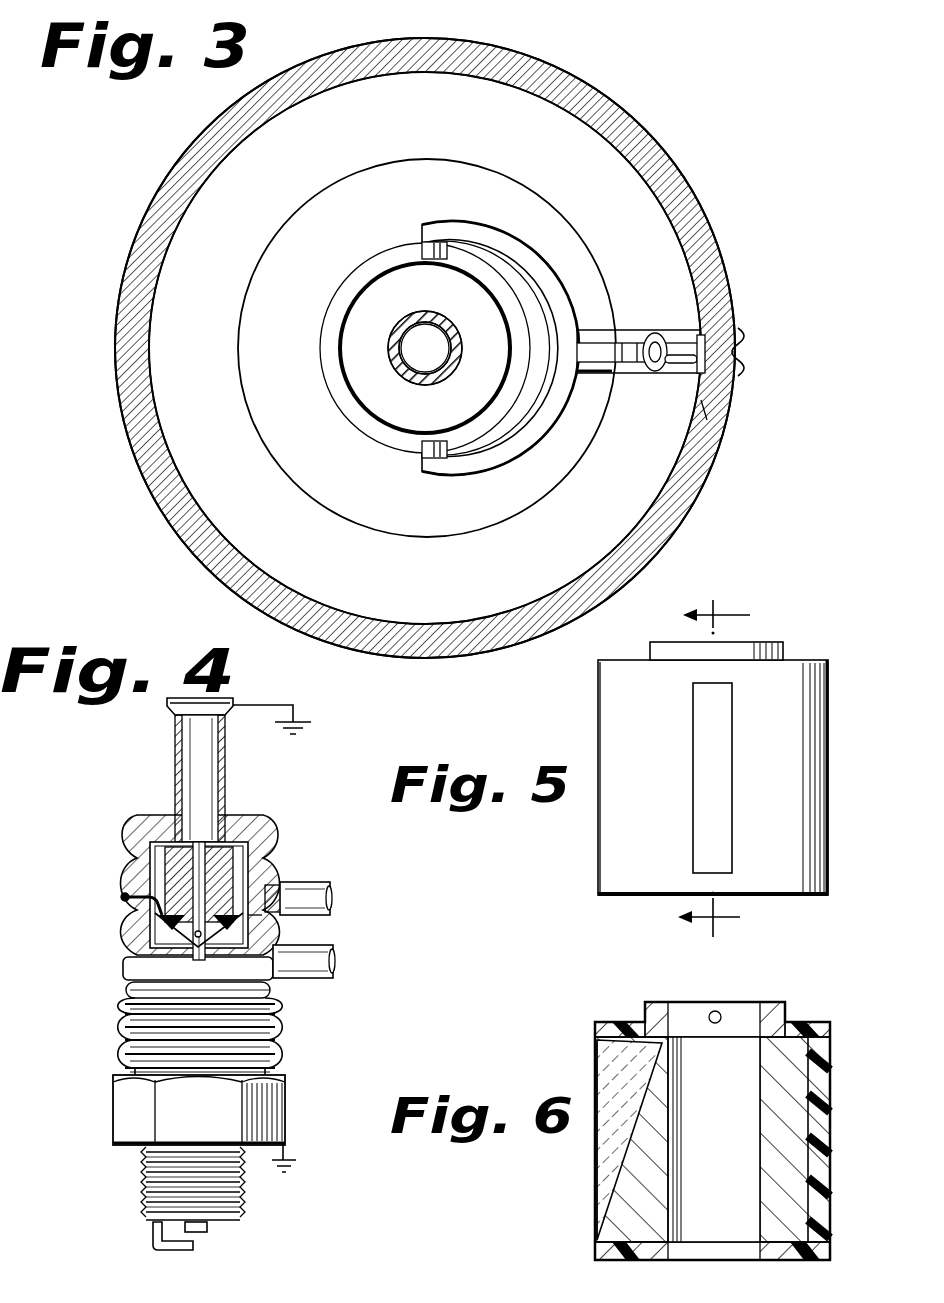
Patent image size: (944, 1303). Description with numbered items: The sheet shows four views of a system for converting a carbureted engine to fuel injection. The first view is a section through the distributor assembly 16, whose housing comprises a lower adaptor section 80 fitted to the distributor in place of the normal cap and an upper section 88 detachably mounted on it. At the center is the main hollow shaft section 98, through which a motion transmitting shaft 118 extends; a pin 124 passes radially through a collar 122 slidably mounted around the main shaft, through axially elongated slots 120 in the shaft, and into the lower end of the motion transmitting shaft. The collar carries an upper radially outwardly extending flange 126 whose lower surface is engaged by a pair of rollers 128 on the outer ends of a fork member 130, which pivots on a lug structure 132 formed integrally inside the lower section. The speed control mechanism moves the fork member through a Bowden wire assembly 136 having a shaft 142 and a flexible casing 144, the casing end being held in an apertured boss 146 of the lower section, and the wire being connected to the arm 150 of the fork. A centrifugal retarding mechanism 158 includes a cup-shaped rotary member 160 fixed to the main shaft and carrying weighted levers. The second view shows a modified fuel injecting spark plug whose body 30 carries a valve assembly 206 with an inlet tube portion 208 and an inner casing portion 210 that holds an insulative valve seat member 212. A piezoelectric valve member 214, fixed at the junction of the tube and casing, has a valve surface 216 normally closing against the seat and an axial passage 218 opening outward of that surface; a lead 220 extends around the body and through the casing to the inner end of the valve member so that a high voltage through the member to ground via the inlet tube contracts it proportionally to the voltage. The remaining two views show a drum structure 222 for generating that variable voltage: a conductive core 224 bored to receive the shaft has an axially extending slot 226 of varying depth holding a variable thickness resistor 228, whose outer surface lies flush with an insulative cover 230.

In FIG. 3, the distributor assembly 16 is at (690, 70).
In FIG. 3, the lower adaptor section 80 is at (330, 630).
In FIG. 3, the upper section 88 is at (560, 566).
In FIG. 3, the main hollow shaft section 98 is at (420, 338).
In FIG. 3, the motion transmitting shaft 118 is at (405, 332).
In FIG. 3, the axially elongated slots 120 is at (457, 348).
In FIG. 3, the collar 122 is at (388, 420).
In FIG. 3, the pin 124 is at (395, 357).
In FIG. 3, the upper radially outwardly extending flange 126 is at (328, 378).
In FIG. 3, the rollers 128 is at (422, 249).
In FIG. 3, the fork member 130 is at (542, 355).
In FIG. 3, the lug structure 132 is at (597, 330).
In FIG. 3, the Bowden wire assembly 136 is at (712, 420).
In FIG. 3, the shaft 142 is at (686, 316).
In FIG. 3, the flexible casing 144 is at (706, 340).
In FIG. 3, the apertured boss 146 is at (744, 372).
In FIG. 3, the arm 150 is at (612, 378).
In FIG. 3, the centrifugal retarding mechanism 158 is at (582, 238).
In FIG. 3, the rotary member 160 is at (262, 362).
In FIG. 4, the body 30 is at (122, 838).
In FIG. 4, the valve assembly 206 is at (274, 848).
In FIG. 4, the inlet tube portion 208 is at (226, 772).
In FIG. 4, the inner casing portion 210 is at (282, 883).
In FIG. 4, the valve seat member 212 is at (152, 940).
In FIG. 4, the valve member 214 is at (160, 870).
In FIG. 4, the valve surface 216 is at (135, 972).
In FIG. 4, the axial passage 218 is at (250, 922).
In FIG. 4, the lead 220 is at (122, 900).
In FIG. 5, the drum structure 222 is at (848, 644).
In FIG. 6, the drum structure 222 is at (840, 990).
In FIG. 6, the core 224 is at (630, 1196).
In FIG. 6, the axially extending slot 226 is at (638, 1097).
In FIG. 5, the variable thickness resistor 228 is at (713, 762).
In FIG. 6, the variable thickness resistor 228 is at (612, 1062).
In FIG. 5, the cover 230 is at (620, 843).
In FIG. 6, the cover 230 is at (632, 1022).